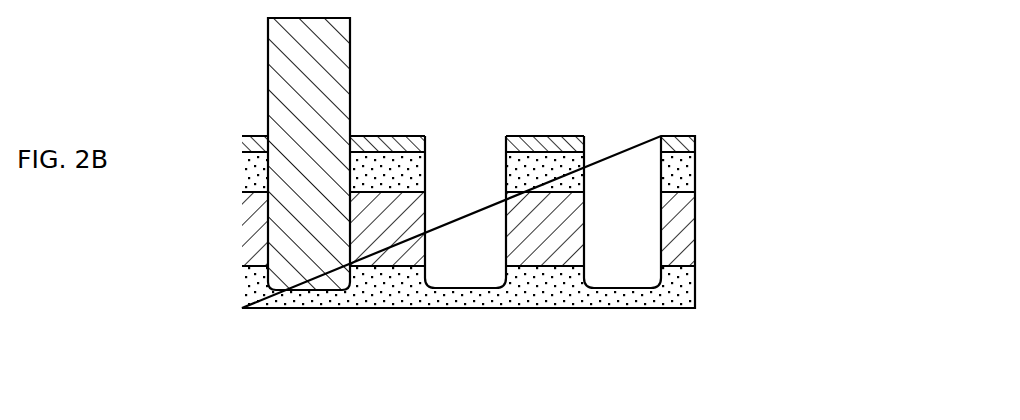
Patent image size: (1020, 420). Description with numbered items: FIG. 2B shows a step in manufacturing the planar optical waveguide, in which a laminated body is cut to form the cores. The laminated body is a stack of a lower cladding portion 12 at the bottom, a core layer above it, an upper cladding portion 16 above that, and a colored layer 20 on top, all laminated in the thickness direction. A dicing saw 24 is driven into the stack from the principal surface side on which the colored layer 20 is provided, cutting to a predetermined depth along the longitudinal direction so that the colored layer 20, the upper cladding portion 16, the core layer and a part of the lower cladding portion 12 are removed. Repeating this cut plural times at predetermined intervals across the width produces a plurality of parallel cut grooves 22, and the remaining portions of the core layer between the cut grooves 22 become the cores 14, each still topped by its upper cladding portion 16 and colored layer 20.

The lower cladding portion 12 is at (695, 293).
The core 14 is at (390, 260).
The upper cladding portion 16 is at (686, 173).
The colored layer 20 is at (252, 136).
The cut groove 22 is at (473, 165).
The dicing saw 24 is at (268, 27).